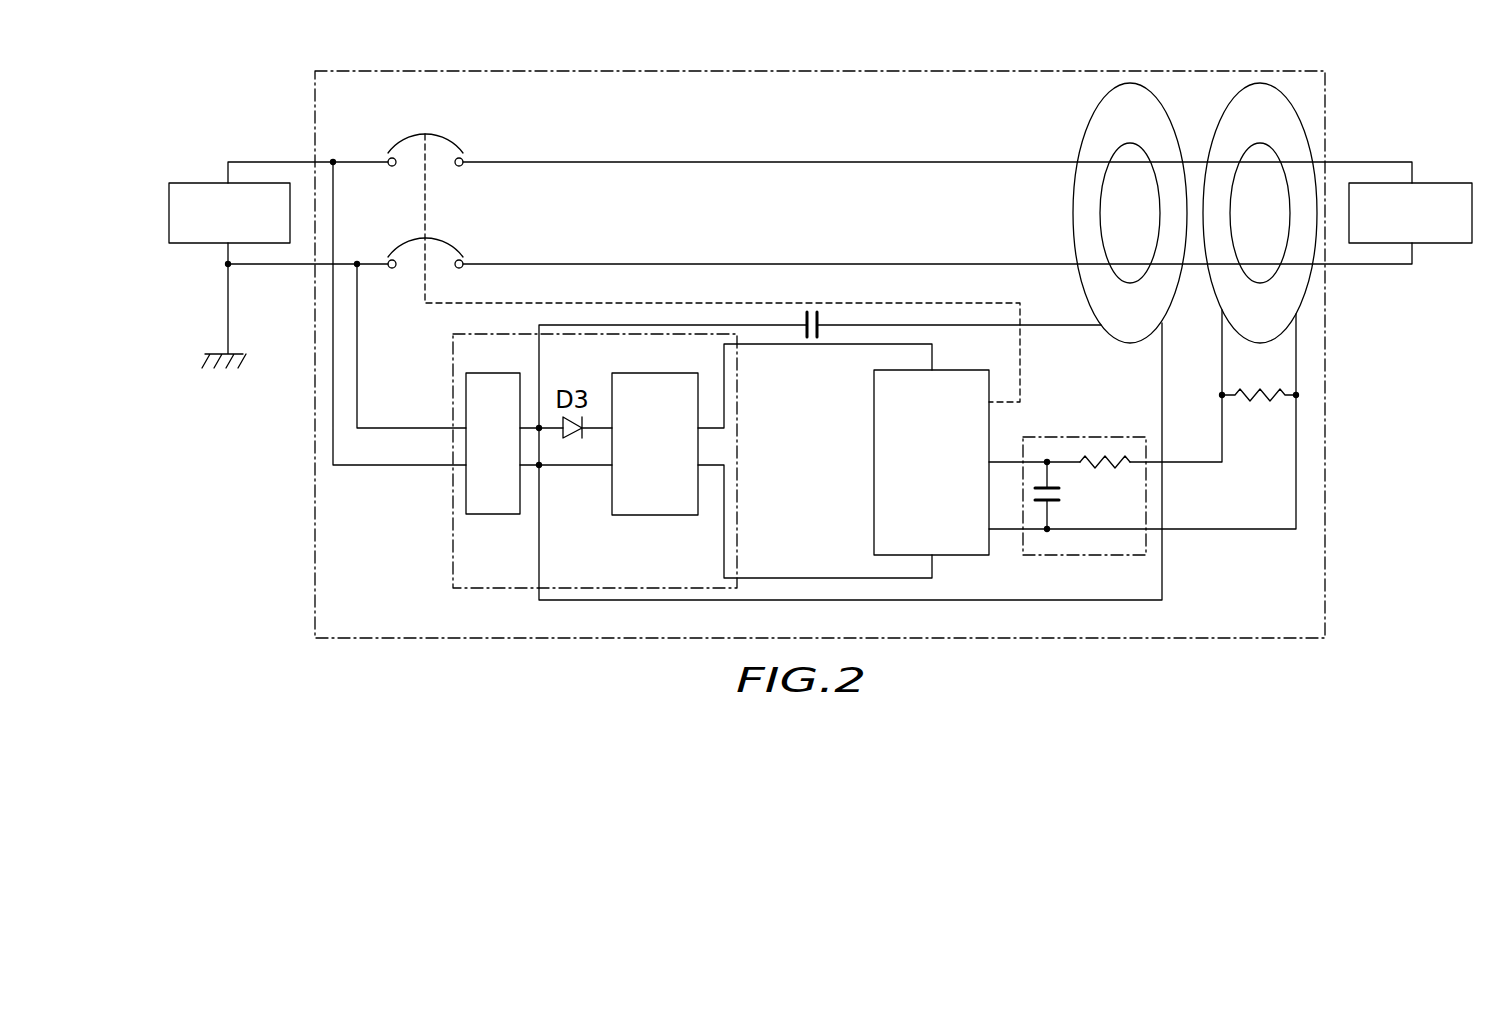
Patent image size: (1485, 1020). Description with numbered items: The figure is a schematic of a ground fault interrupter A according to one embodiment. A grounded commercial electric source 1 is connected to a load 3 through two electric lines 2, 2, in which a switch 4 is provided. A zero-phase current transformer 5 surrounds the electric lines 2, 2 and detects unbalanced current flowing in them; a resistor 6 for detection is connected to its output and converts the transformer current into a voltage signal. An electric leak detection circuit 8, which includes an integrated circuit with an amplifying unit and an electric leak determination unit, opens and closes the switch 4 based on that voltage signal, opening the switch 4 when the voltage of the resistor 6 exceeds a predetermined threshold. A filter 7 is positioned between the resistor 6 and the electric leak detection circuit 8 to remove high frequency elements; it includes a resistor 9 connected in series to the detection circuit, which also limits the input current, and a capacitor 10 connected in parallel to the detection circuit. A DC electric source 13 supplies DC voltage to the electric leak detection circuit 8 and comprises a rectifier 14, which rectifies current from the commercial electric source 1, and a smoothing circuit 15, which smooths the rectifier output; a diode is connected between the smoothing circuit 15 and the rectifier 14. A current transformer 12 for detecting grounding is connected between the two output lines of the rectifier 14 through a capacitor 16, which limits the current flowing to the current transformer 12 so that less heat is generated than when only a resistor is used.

The commercial electric source 1 is at (207, 186).
The electric lines 2 is at (715, 162).
The load 3 is at (1436, 183).
The switch 4 is at (452, 141).
The zero-phase current transformer 5 is at (1237, 102).
The resistor for detection 6 is at (1260, 405).
The filter 7 is at (1146, 498).
The electric leak detection circuit 8 is at (989, 418).
The resistor 9 is at (1103, 455).
The capacitor 10 is at (1058, 493).
The current transformer 12 is at (1093, 128).
The DC electric source 13 is at (448, 574).
The rectifier 14 is at (488, 514).
The smoothing circuit 15 is at (653, 515).
The capacitor 16 is at (814, 338).
The ground fault interrupter A is at (1325, 422).